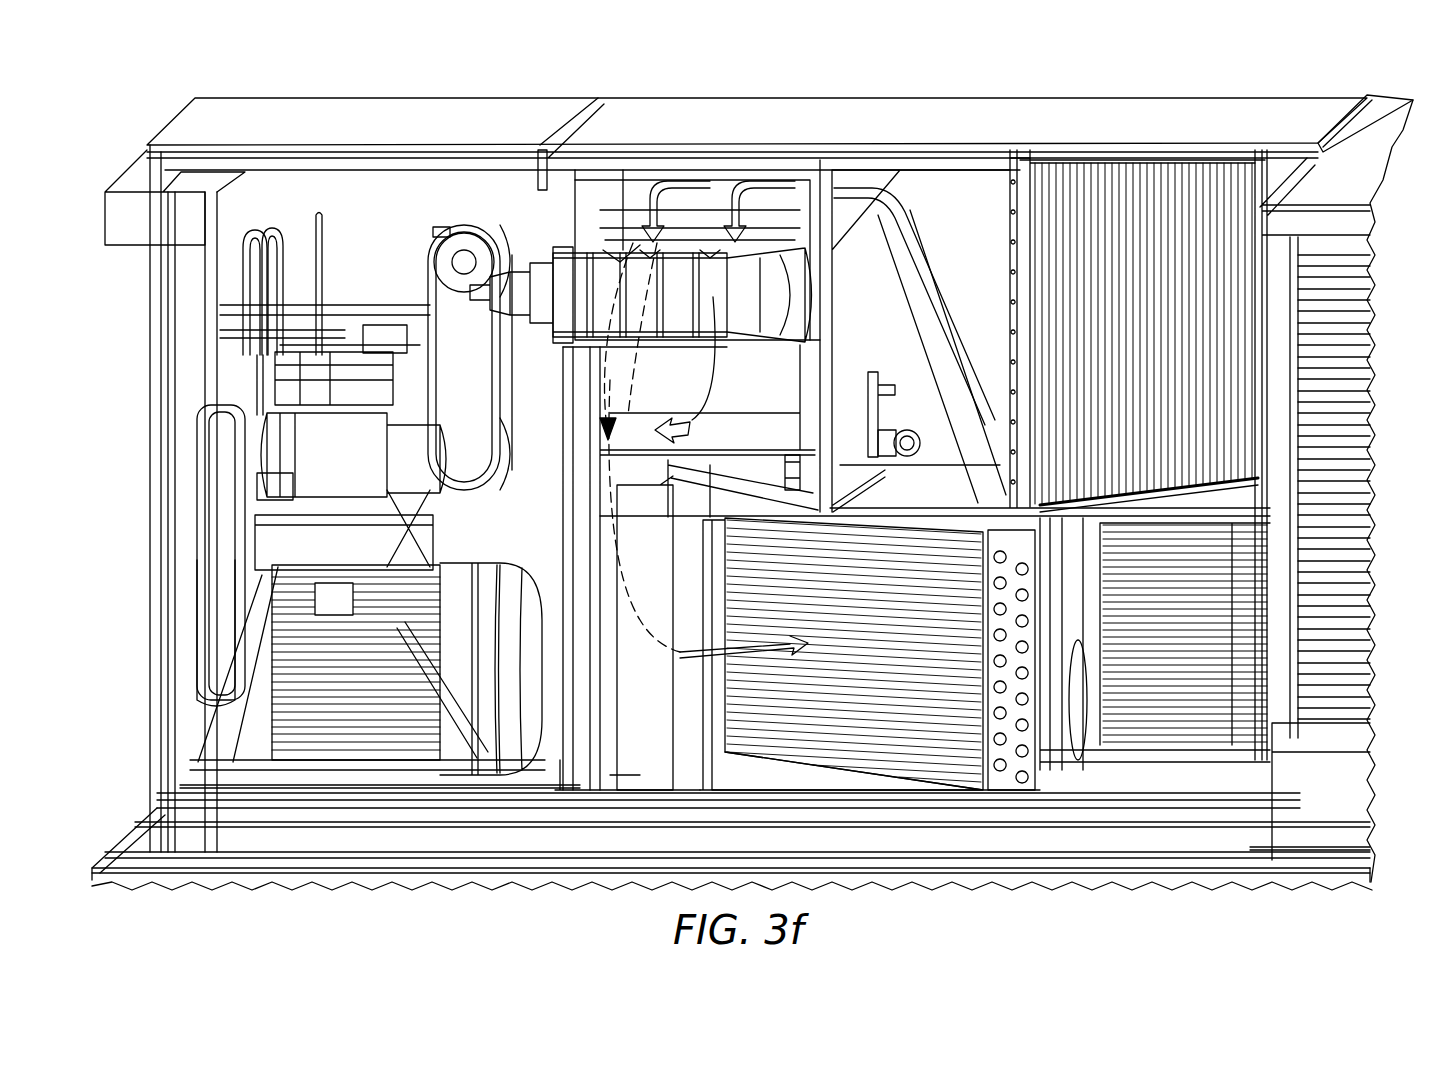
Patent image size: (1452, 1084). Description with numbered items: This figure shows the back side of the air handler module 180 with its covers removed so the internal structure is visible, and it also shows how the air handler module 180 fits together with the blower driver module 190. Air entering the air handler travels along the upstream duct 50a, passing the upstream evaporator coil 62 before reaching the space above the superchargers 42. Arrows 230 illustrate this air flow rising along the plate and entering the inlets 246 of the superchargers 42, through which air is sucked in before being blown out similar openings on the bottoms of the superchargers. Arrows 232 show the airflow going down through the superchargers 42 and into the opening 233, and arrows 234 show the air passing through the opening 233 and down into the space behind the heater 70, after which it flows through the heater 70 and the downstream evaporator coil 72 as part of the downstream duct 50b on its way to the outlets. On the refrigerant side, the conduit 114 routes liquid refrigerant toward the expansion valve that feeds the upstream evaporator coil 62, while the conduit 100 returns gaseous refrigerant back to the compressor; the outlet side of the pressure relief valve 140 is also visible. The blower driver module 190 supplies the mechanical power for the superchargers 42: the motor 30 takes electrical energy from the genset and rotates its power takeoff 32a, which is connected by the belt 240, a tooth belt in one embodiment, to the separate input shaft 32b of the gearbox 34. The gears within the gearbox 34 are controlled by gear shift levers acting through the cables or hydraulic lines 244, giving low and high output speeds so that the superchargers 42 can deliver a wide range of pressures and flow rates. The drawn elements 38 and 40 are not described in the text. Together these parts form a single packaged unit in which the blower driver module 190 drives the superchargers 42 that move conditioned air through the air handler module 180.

The blower driver module 190 is at (110, 127).
The air handler module 180 is at (1428, 128).
The upstream evaporator coil 62 is at (1120, 178).
The upstream duct 50a is at (988, 227).
The downstream duct 50b is at (702, 405).
The conduit 114 is at (898, 389).
The conduit 100 is at (922, 441).
The superchargers 42 is at (677, 283).
The inlets 246 is at (623, 213).
The arrows 230 is at (693, 178).
The arrows 232 is at (617, 360).
The opening 233 is at (690, 440).
The arrows 234 is at (630, 583).
The belt drive 38 is at (475, 395).
The pulley 40 is at (422, 290).
The gearbox 34 is at (370, 490).
The cables or hydraulic lines 244 is at (280, 253).
The input shaft 32b is at (198, 430).
The belt 240 is at (210, 528).
The power takeoff 32a is at (193, 683).
The motor 30 is at (343, 727).
The heater 70 is at (637, 763).
The downstream evaporator coil 72 is at (860, 750).
The pressure relief valve 140 is at (1080, 685).